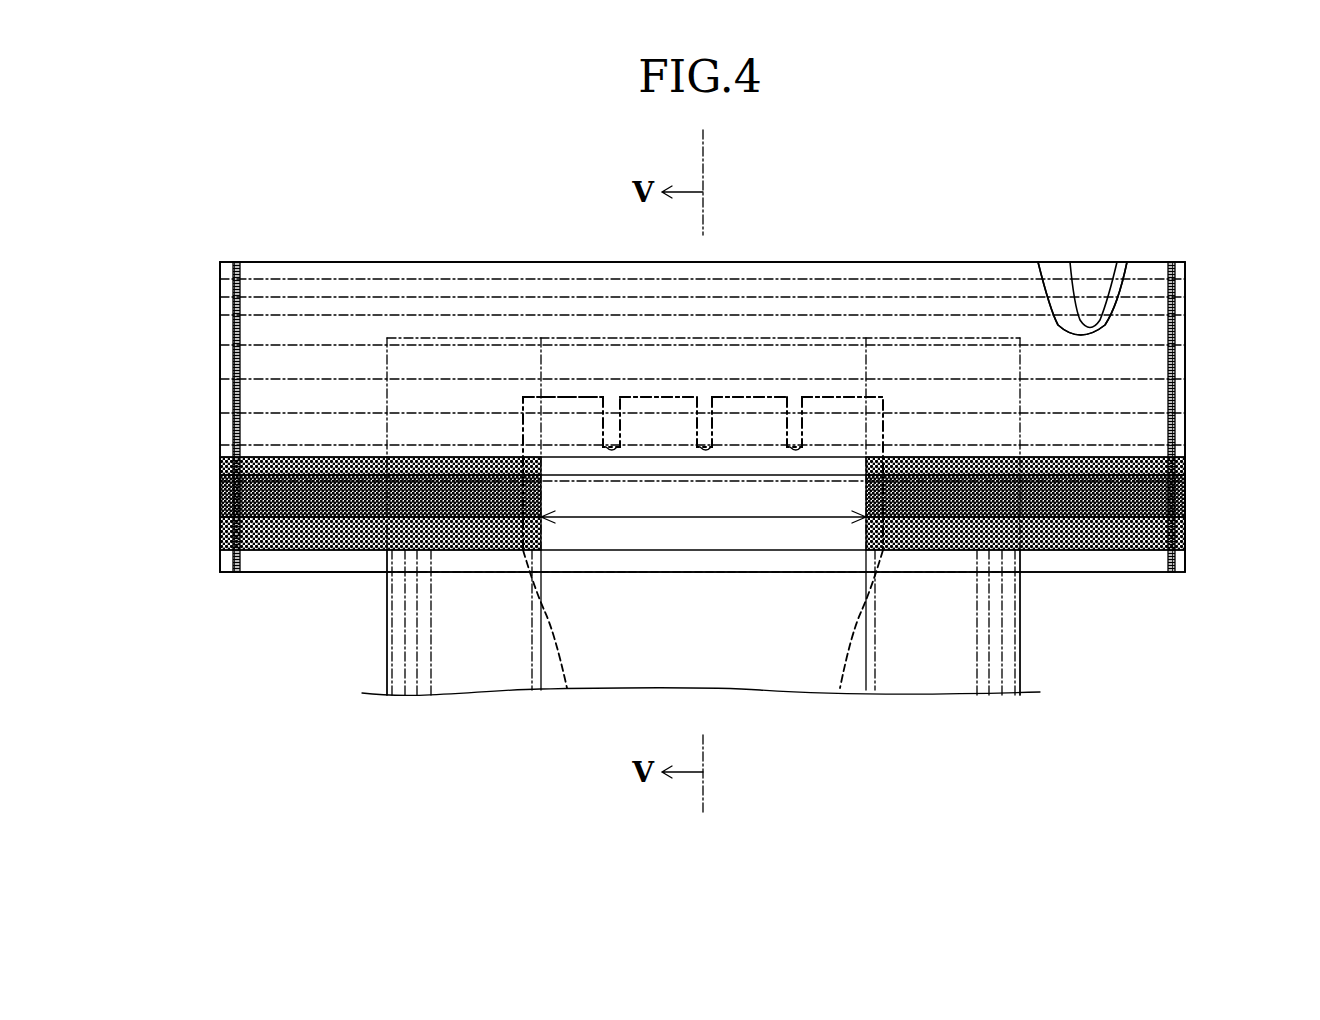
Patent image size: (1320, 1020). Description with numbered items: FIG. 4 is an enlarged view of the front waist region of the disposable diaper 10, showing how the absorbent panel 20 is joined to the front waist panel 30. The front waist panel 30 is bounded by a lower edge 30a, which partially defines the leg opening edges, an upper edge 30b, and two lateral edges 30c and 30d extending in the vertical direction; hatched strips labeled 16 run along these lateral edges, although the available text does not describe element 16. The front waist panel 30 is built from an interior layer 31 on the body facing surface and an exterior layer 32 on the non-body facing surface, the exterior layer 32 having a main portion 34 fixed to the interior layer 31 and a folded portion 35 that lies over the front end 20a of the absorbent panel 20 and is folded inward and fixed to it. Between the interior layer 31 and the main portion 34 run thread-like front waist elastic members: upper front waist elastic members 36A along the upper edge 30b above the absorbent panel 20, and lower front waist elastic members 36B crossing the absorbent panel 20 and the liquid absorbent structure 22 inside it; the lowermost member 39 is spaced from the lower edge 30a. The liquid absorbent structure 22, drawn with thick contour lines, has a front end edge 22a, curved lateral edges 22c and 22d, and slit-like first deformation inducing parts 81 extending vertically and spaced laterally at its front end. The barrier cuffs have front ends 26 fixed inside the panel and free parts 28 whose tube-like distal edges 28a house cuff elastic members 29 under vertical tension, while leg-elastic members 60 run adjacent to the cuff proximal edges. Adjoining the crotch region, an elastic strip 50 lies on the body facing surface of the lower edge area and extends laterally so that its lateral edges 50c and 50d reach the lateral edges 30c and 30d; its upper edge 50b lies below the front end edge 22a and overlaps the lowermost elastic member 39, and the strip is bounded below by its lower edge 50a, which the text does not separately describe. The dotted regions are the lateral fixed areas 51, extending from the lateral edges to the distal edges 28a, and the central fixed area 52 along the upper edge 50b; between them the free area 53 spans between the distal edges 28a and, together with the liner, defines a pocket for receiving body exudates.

The disposable diaper 10 is at (1184, 207).
The fixing portion 16 is at (237, 433).
The absorbent panel 20 is at (1026, 690).
The front end of absorbent panel 20a is at (500, 340).
The liquid absorbent structure 22 is at (793, 650).
The front end edge of liquid absorbent structure 22a is at (738, 397).
The lateral edge of liquid absorbent structure 22c is at (553, 675).
The lateral edge of liquid absorbent structure 22d is at (850, 655).
The front and rear ends of barrier cuffs 26 is at (455, 397).
The free part of barrier cuff 28 is at (468, 673).
The tube-like distal edge 28a is at (541, 580).
The cuff elastic members 29 is at (532, 660).
The front waist panel 30 is at (1185, 580).
The lower edge of front waist panel 30a is at (283, 573).
The upper edge of front waist panel 30b is at (812, 262).
The lateral edge of front waist panel 30c is at (220, 393).
The lateral edge of front waist panel 30d is at (1185, 532).
The interior layer 31 is at (1062, 288).
The exterior layer 32 is at (1093, 273).
The main portion of exterior layer 34 is at (1095, 252).
The folded portion of exterior layer 35 is at (977, 288).
The upper front waist elastic members 36A is at (380, 315).
The lower front waist elastic members 36B is at (258, 381).
The lowermost front waist elastic member 39 is at (222, 490).
The elastic strip 50 is at (1088, 530).
The lower surface of packing 50a is at (1122, 550).
The upper edge of elastic strip 50b is at (1122, 457).
The lateral edge of elastic strip 50c is at (220, 502).
The lateral edge of elastic strip 50d is at (1185, 492).
The lateral fixed areas 51 is at (352, 520).
The central fixed area 52 is at (1078, 478).
The free area 53 is at (710, 522).
The leg-elastic members 60 is at (415, 657).
The first deformation inducing parts 81 is at (705, 400).